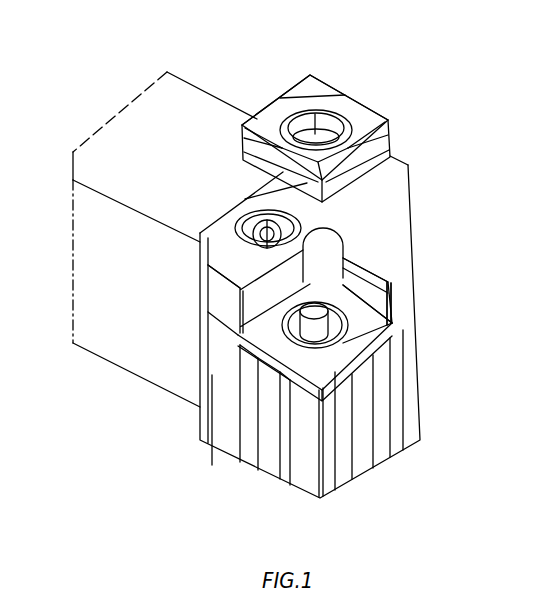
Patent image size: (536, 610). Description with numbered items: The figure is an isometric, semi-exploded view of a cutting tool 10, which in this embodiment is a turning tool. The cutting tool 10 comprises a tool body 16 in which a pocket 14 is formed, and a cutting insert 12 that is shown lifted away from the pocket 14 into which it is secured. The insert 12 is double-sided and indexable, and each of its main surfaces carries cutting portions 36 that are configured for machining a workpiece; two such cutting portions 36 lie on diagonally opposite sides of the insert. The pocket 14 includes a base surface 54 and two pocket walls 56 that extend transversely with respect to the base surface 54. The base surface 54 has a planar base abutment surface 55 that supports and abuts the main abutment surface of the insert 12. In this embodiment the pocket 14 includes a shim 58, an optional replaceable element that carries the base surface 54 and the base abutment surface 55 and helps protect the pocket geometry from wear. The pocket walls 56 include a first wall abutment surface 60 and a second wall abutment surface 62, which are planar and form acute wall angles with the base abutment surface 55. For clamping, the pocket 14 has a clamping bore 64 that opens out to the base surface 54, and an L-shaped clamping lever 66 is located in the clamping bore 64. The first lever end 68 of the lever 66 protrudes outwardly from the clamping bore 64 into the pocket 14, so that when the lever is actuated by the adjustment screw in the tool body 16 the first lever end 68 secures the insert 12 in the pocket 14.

The cutting tool 10 is at (425, 150).
The cutting insert 12 is at (366, 101).
The pocket 14 is at (378, 260).
The tool body 16 is at (187, 127).
The cutting portion 36 is at (322, 72).
The base surface 54 is at (240, 338).
The base abutment surface 55 is at (305, 375).
The pocket walls 56 is at (258, 278).
The shim 58 is at (250, 361).
The first wall abutment surface 60 is at (238, 300).
The second wall abutment surface 62 is at (365, 306).
The clamping bore 64 is at (347, 345).
The clamping lever 66 is at (322, 355).
The first lever end 68 is at (358, 335).